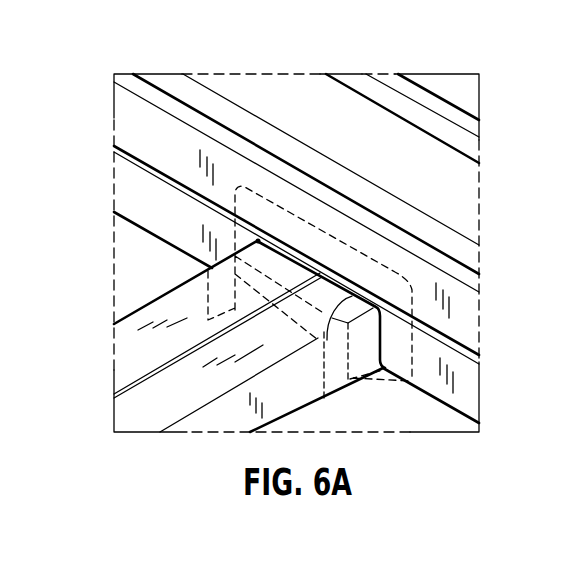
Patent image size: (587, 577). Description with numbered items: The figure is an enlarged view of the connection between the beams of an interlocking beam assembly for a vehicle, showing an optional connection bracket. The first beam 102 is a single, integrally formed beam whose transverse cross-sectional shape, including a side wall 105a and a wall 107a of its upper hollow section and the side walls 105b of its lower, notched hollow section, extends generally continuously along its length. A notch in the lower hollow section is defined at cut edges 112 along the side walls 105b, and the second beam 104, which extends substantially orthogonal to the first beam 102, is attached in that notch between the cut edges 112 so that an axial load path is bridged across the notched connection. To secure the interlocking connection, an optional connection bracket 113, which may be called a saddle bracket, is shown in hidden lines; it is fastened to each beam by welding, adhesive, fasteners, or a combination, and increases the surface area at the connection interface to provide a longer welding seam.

The first beam 102 is at (452, 101).
The second beam 104 is at (165, 292).
The side wall 105a is at (140, 121).
The side wall 105b is at (140, 204).
The bottom wall 107a is at (300, 90).
The cut edge 112 is at (327, 340).
The connection bracket 113 is at (384, 262).